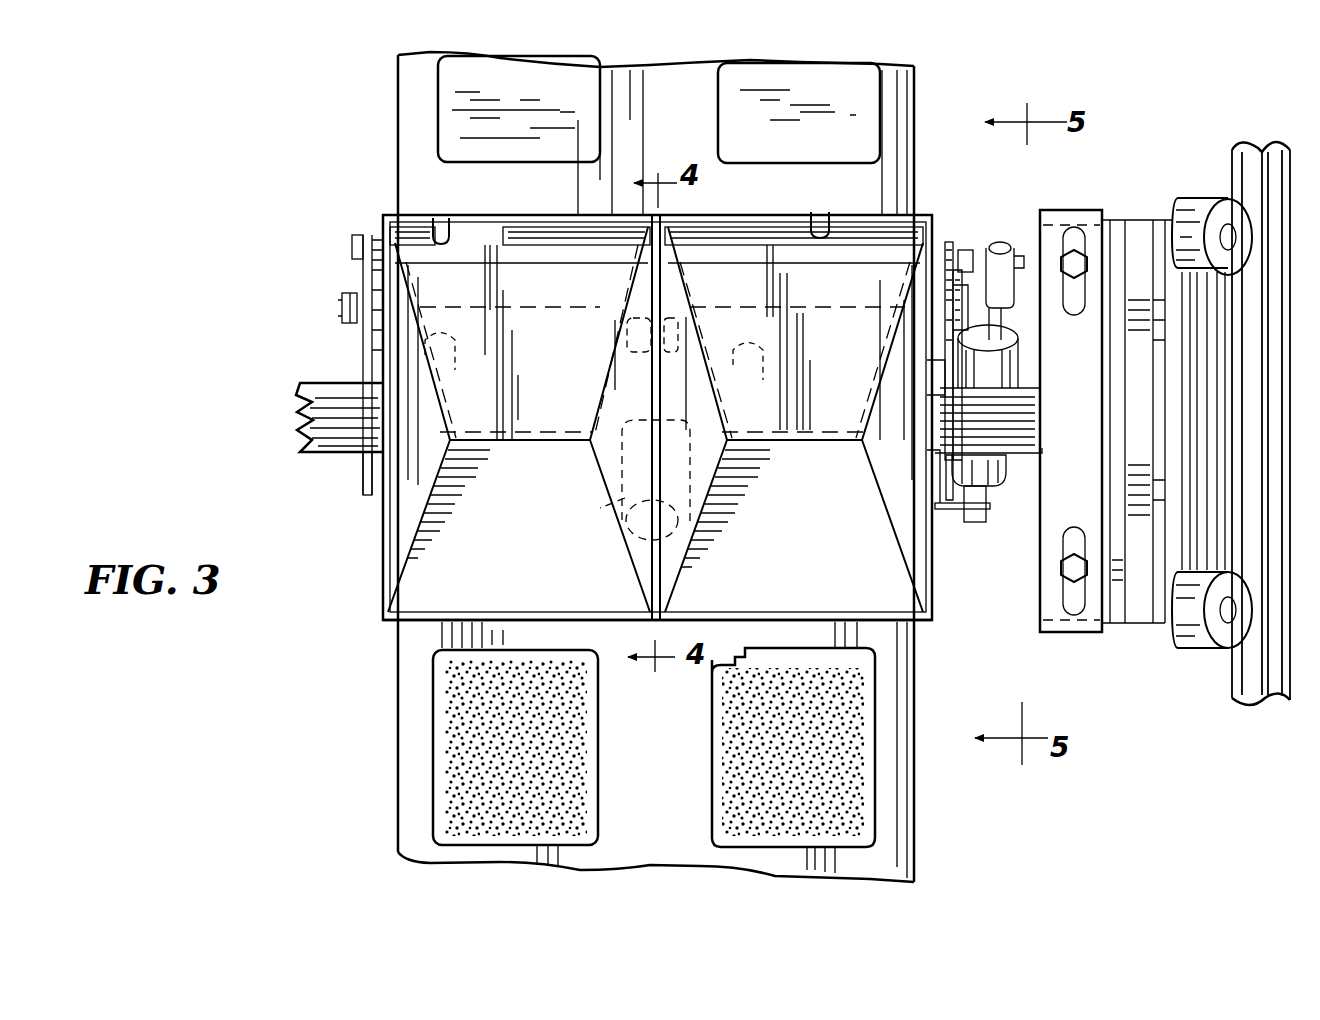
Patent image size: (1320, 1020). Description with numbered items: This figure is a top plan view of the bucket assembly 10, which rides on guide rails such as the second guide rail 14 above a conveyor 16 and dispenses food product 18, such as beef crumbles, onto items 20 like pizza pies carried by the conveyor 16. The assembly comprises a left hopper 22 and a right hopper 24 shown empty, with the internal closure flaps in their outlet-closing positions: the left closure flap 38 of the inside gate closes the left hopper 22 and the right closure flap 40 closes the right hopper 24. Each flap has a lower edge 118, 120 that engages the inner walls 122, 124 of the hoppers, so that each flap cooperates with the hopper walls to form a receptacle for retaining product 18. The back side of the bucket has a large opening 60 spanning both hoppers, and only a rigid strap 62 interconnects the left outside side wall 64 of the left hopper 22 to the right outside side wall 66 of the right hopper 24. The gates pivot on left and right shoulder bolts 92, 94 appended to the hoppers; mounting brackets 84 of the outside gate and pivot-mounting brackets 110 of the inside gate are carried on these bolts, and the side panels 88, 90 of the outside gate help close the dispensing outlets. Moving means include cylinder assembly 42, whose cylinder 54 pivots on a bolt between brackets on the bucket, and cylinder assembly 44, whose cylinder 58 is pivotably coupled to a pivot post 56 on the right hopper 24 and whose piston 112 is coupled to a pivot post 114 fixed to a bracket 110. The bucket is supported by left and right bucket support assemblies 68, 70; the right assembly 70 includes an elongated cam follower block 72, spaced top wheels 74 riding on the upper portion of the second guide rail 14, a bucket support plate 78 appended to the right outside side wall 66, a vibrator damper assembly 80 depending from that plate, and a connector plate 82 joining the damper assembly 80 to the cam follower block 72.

The bucket assembly 10 is at (1030, 192).
The second guide rail 14 is at (1252, 172).
The conveyor 16 is at (925, 104).
The product 18 is at (560, 770).
The items 20 is at (432, 152).
The left hopper 22 is at (380, 624).
The right hopper 24 is at (940, 586).
The left closure flap 38 is at (521, 333).
The right closure flap 40 is at (795, 333).
The cylinder assembly 42 is at (628, 554).
The cylinder assembly 44 is at (1048, 421).
The cylinder 54 is at (600, 498).
The pivot post 56 is at (947, 522).
The cylinder 58 is at (1016, 368).
The large opening 60 is at (447, 232).
The rigid strap 62 is at (587, 232).
The left outside side wall 64 is at (380, 518).
The right outside side wall 66 is at (937, 618).
The left bucket support assembly 68 is at (292, 383).
The right bucket support assembly 70 is at (1112, 700).
The cam follower block 72 is at (1198, 302).
The top wheels 74 is at (1190, 212).
The bucket support plate 78 is at (1017, 438).
The vibrator damper assembly 80 is at (1114, 628).
The connector plate 82 is at (1140, 628).
The mounting brackets 84 is at (373, 238).
The side panels 88 is at (362, 478).
The side panels 90 is at (945, 375).
The left shoulder bolt 92 is at (340, 303).
The right shoulder bolt 94 is at (945, 302).
The pivot-mounting bracket 110 is at (352, 250).
The piston 112 is at (1005, 318).
The pivot post 114 is at (1022, 250).
The lower edge 118 is at (547, 442).
The lower edge 120 is at (828, 442).
The inner wall 122 is at (519, 526).
The inner wall 124 is at (794, 526).